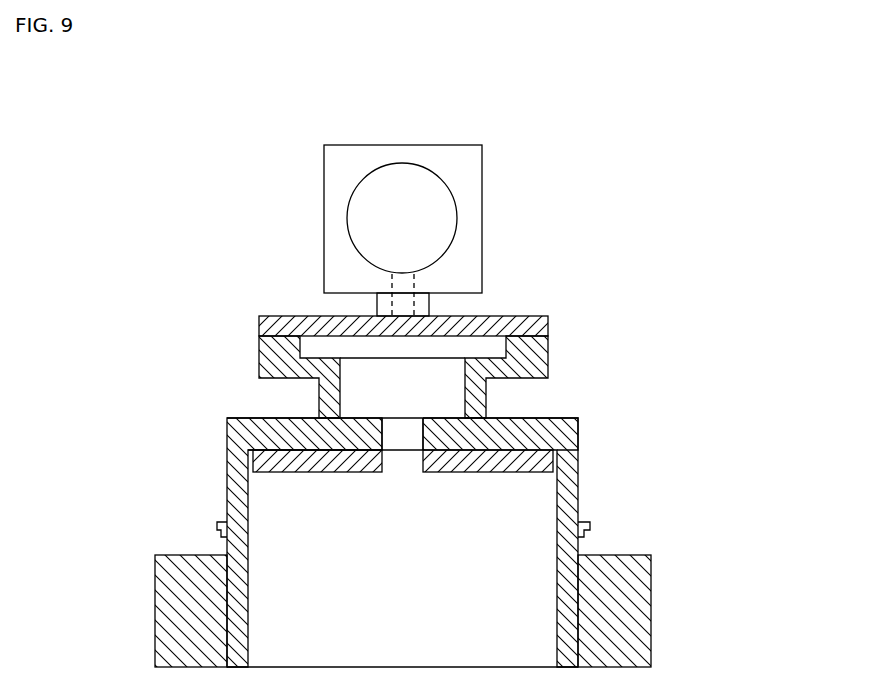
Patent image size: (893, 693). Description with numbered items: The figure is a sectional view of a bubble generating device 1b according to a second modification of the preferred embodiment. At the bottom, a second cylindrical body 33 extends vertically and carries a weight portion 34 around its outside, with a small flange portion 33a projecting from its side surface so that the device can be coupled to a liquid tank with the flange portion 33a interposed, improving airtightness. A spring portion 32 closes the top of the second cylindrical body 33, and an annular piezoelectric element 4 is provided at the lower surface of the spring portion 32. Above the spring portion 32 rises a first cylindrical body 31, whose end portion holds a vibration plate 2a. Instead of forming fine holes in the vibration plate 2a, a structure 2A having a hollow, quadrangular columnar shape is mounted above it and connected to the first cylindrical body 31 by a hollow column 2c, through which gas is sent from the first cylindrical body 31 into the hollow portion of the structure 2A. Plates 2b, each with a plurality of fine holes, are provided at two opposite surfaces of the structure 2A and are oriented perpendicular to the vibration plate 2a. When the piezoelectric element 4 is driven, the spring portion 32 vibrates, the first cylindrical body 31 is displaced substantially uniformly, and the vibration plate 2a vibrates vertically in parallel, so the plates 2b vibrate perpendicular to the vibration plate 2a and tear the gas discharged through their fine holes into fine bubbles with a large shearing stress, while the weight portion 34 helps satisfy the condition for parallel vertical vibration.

The bubble generating device 1b is at (512, 157).
The structure 2A is at (467, 185).
The plates 2b is at (435, 225).
The hollow column 2c is at (377, 305).
The vibration plate 2a is at (511, 327).
The first cylindrical body 31 is at (488, 402).
The spring portion 32 is at (527, 436).
The second cylindrical body 33 is at (567, 497).
The flange portion 33a is at (217, 528).
The weight portion 34 is at (617, 608).
The piezoelectric element 4 is at (272, 462).